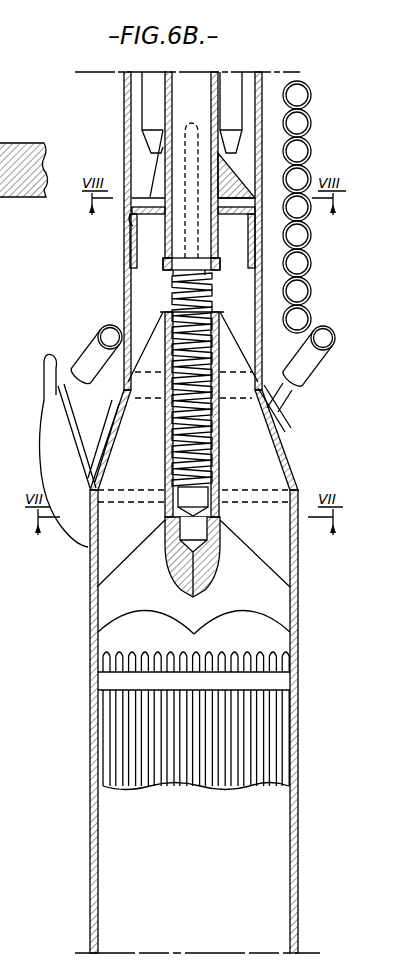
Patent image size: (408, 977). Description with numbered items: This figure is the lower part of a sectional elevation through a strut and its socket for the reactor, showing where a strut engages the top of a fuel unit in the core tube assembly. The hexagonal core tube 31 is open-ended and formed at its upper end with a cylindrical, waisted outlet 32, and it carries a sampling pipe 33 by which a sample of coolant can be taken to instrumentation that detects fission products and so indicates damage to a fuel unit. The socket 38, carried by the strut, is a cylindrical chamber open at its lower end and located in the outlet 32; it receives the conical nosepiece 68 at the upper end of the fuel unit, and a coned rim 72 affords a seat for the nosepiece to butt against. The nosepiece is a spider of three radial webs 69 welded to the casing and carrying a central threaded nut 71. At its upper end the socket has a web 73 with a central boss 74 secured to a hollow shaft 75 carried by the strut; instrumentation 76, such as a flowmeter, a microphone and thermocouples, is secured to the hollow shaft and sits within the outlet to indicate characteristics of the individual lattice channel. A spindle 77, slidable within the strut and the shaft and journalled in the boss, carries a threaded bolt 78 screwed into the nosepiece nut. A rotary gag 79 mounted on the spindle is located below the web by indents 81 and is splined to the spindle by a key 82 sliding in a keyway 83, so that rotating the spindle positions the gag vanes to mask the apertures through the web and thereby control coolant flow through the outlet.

The hexagonal tube 31 is at (92, 696).
The waisted outlet 32 is at (125, 295).
The sampling pipe 33 is at (318, 335).
The socket 38 is at (253, 302).
The conical nosepiece 68 is at (255, 468).
The radial web 69 is at (267, 483).
The threaded nut 71 is at (167, 360).
The coned rim 72 is at (140, 383).
The web 73 is at (252, 200).
The central boss 74 is at (228, 178).
The hollow shaft 75 is at (212, 110).
The instrumentation 76 is at (150, 107).
The spindle 77 is at (190, 82).
The threaded bolt 78 is at (175, 450).
The rotary gag 79 is at (163, 212).
The indent 81 is at (128, 222).
The key 82 is at (205, 238).
The keyway 83 is at (187, 148).